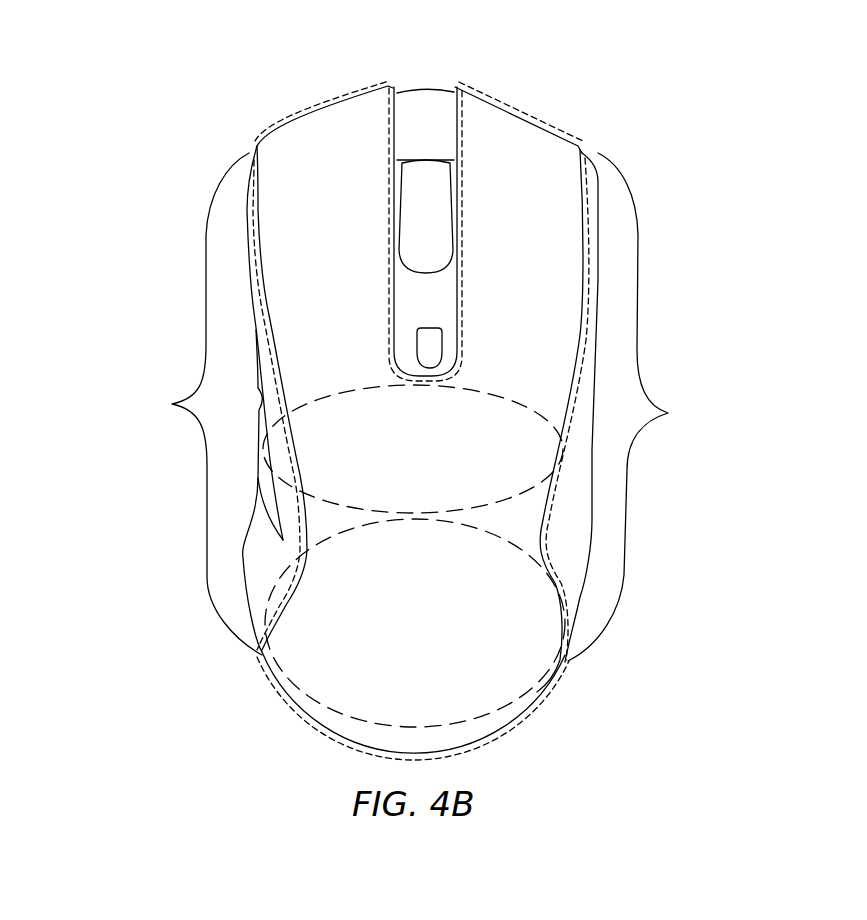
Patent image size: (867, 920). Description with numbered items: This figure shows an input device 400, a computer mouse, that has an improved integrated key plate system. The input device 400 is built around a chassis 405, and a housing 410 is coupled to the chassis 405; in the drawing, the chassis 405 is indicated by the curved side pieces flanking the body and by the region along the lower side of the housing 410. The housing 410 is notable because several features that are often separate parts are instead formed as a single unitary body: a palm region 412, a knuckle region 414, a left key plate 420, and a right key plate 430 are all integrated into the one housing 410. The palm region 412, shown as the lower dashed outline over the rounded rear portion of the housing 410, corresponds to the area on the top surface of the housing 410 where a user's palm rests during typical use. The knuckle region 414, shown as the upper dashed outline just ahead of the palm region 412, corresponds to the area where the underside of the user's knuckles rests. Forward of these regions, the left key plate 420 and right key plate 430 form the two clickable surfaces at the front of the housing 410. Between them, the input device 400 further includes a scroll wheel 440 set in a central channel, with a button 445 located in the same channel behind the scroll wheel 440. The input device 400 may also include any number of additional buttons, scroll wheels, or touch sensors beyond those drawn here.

The input device 400 is at (170, 171).
The chassis 405 is at (683, 583).
The housing 410 is at (438, 646).
The palm region 412 is at (502, 538).
The knuckle region 414 is at (342, 392).
The left key plate 420 is at (327, 151).
The right key plate 430 is at (523, 163).
The scroll wheel 440 is at (425, 183).
The buttons 445 is at (428, 344).